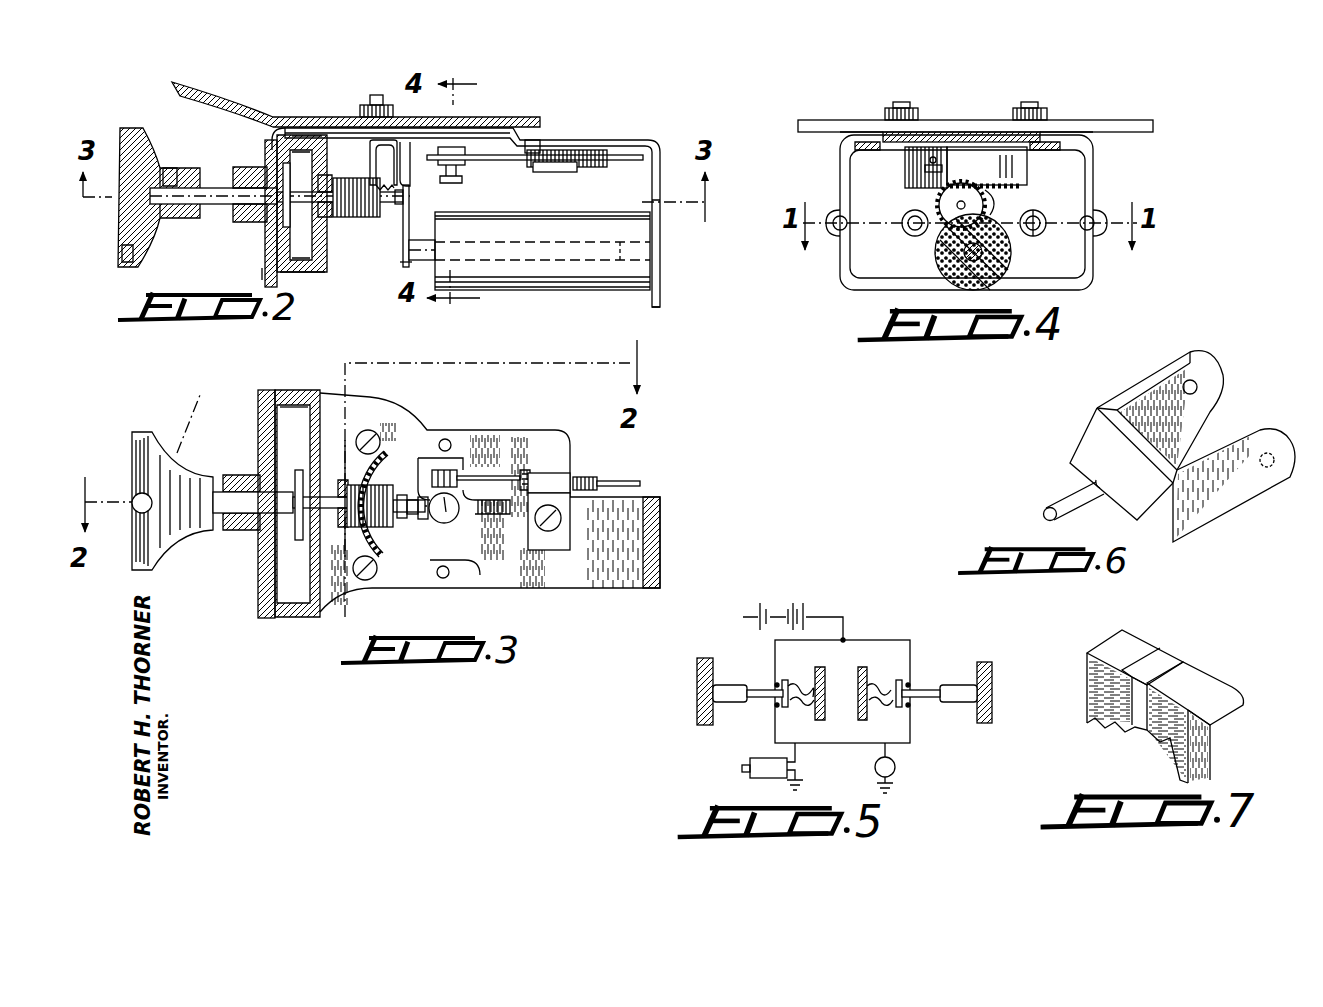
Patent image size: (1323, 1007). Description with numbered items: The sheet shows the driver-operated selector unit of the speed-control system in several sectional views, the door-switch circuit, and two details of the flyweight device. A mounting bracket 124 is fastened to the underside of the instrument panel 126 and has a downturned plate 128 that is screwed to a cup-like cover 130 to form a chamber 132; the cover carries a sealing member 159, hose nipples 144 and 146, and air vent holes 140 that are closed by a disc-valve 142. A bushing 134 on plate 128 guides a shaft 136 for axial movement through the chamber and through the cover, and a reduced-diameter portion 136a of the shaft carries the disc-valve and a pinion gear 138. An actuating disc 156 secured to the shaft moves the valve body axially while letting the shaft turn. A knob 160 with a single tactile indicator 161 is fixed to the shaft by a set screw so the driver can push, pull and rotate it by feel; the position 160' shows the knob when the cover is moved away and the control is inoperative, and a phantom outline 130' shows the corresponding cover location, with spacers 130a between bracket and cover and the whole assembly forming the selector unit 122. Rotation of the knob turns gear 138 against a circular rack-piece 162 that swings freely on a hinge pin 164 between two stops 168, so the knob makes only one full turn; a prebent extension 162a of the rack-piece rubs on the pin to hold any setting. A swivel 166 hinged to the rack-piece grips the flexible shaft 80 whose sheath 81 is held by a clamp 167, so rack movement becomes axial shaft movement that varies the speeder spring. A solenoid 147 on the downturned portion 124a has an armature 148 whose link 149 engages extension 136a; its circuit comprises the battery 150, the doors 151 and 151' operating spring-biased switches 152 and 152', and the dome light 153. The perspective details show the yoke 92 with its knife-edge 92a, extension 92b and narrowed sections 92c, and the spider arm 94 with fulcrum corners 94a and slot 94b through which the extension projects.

In FIG. 2, the flexible shaft 80 is at (615, 156).
In FIG. 3, the flexible shaft 80 is at (625, 483).
In FIG. 2, the sheath 81 is at (590, 150).
In FIG. 3, the sheath 81 is at (585, 478).
In FIG. 6, the yoke member 92 is at (1163, 370).
In FIG. 6, the knife-edge 92a is at (1070, 465).
In FIG. 6, the extension 92b is at (1063, 507).
In FIG. 6, the narrowed sections 92c is at (1120, 395).
In FIG. 7, the arm 94 is at (1093, 678).
In FIG. 7, the corners 94a is at (1212, 725).
In FIG. 7, the slot 94b is at (1170, 665).
In FIG. 2, the control unit 122 is at (258, 273).
In FIG. 2, the mounting bracket 124 is at (497, 130).
In FIG. 4, the mounting bracket 124 is at (840, 137).
In FIG. 3, the mounting bracket 124 is at (515, 578).
In FIG. 2, the downturned portion 124a is at (660, 295).
In FIG. 2, the instrument panel 126 is at (197, 93).
In FIG. 4, the instrument panel 126 is at (1105, 122).
In FIG. 2, the plate 128 is at (265, 262).
In FIG. 4, the plate 128 is at (840, 275).
In FIG. 3, the plate 128 is at (265, 605).
In FIG. 2, the cover 130 is at (330, 212).
In FIG. 4, the cover 130 is at (950, 234).
In FIG. 3, the cover 130 is at (276, 486).
In FIG. 3, the alternate housing position 130' is at (487, 490).
In FIG. 2, the spacer 130a is at (308, 145).
In FIG. 4, the spacer 130a is at (855, 147).
In FIG. 2, the chamber 132 is at (300, 240).
In FIG. 3, the chamber 132 is at (290, 420).
In FIG. 2, the bushing 134 is at (235, 216).
In FIG. 3, the bushing 134 is at (245, 522).
In FIG. 2, the shaft 136 is at (212, 187).
In FIG. 3, the shaft 136 is at (222, 490).
In FIG. 2, the reduced-diameter shaft portion 136a is at (412, 185).
In FIG. 3, the reduced-diameter shaft portion 136a is at (398, 540).
In FIG. 2, the pinion gear 138 is at (409, 224).
In FIG. 4, the pinion gear 138 is at (995, 205).
In FIG. 3, the pinion gear 138 is at (390, 470).
In FIG. 2, the air vent holes 140 is at (325, 178).
In FIG. 3, the air vent holes 140 is at (335, 485).
In FIG. 2, the disc-valve 142 is at (330, 216).
In FIG. 4, the disc-valve 142 is at (940, 205).
In FIG. 3, the disc-valve 142 is at (357, 530).
In FIG. 4, the hose nipple 144 is at (905, 235).
In FIG. 2, the hose nipple 146 is at (425, 240).
In FIG. 4, the hose nipple 146 is at (1040, 215).
In FIG. 2, the solenoid 147 is at (565, 270).
In FIG. 4, the solenoid 147 is at (985, 250).
In FIG. 5, the solenoid 147 is at (752, 760).
In FIG. 2, the armature 148 is at (430, 256).
In FIG. 4, the armature 148 is at (1000, 270).
In FIG. 2, the link 149 is at (408, 267).
In FIG. 3, the link 149 is at (430, 527).
In FIG. 5, the vehicle battery 150 is at (817, 612).
In FIG. 5, the vehicle door 151 is at (707, 691).
In FIG. 5, the vehicle door 151' is at (947, 699).
In FIG. 5, the spring-biased switch 152 is at (766, 676).
In FIG. 5, the spring-biased switch 152' is at (920, 673).
In FIG. 5, the dome light 153 is at (896, 767).
In FIG. 2, the actuating disc 156 is at (285, 162).
In FIG. 3, the actuating disc 156 is at (280, 520).
In FIG. 2, the sealing member 159 is at (290, 282).
In FIG. 2, the knob 160 is at (130, 197).
In FIG. 3, the knob 160 is at (136, 490).
In FIG. 3, the knob position 160' is at (178, 413).
In FIG. 2, the tactile indicator 161 is at (126, 262).
In FIG. 3, the tactile indicator 161 is at (138, 497).
In FIG. 2, the rack-piece 162 is at (390, 130).
In FIG. 4, the rack-piece 162 is at (905, 165).
In FIG. 3, the rack-piece 162 is at (382, 545).
In FIG. 2, the extension 162a is at (515, 158).
In FIG. 3, the extension 162a is at (460, 485).
In FIG. 2, the hinge pin 164 is at (451, 165).
In FIG. 4, the hinge pin 164 is at (967, 137).
In FIG. 3, the hinge pin 164 is at (457, 515).
In FIG. 4, the swivel 166 is at (930, 165).
In FIG. 3, the swivel 166 is at (463, 462).
In FIG. 2, the clamp 167 is at (580, 170).
In FIG. 3, the clamp 167 is at (570, 525).
In FIG. 2, the stops 168 is at (455, 130).
In FIG. 4, the stops 168 is at (890, 120).
In FIG. 3, the stops 168 is at (450, 440).